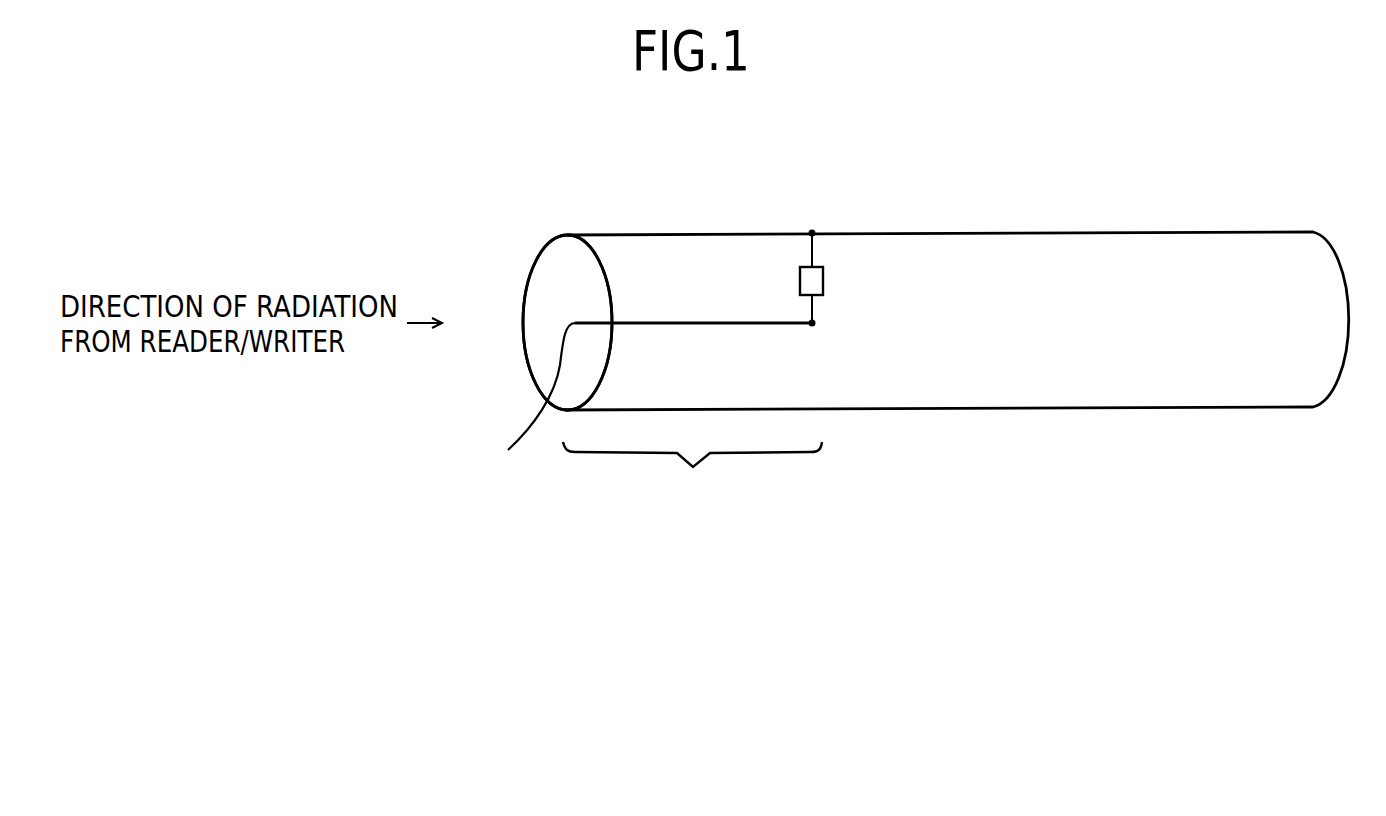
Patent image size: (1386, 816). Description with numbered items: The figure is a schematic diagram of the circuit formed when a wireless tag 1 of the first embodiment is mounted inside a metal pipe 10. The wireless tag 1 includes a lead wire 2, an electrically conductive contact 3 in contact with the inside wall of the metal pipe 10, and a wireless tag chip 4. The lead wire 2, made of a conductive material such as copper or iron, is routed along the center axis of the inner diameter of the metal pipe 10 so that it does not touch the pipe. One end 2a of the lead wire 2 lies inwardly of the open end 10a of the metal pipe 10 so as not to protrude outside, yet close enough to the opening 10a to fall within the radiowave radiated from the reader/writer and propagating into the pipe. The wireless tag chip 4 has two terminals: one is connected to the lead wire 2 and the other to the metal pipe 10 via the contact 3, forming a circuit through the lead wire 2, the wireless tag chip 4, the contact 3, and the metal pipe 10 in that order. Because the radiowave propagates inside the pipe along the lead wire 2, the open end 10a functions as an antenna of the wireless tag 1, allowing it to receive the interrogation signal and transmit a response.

The wireless tag 1 is at (692, 476).
The lead wire 2 is at (773, 326).
The one end of the lead wire 2a is at (520, 396).
The electrically conductive contact 3 is at (812, 233).
The wireless tag chip 4 is at (823, 280).
The metal pipe 10 is at (1190, 373).
The open end of the metal pipe 10a is at (562, 256).